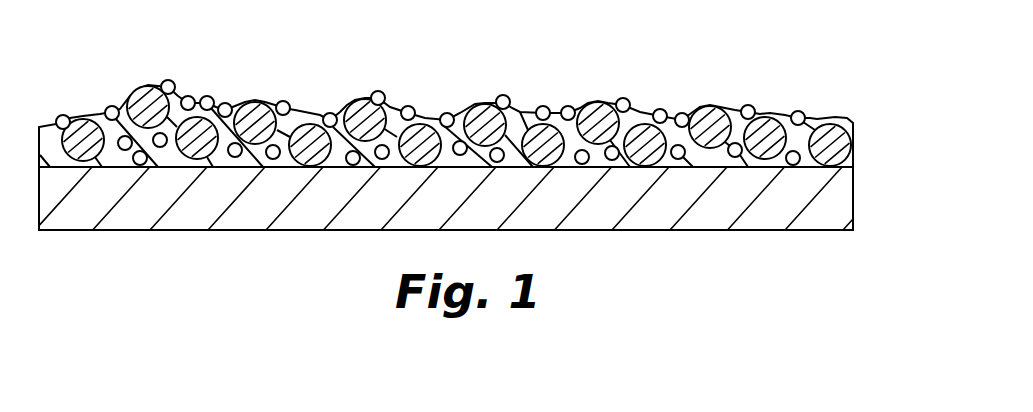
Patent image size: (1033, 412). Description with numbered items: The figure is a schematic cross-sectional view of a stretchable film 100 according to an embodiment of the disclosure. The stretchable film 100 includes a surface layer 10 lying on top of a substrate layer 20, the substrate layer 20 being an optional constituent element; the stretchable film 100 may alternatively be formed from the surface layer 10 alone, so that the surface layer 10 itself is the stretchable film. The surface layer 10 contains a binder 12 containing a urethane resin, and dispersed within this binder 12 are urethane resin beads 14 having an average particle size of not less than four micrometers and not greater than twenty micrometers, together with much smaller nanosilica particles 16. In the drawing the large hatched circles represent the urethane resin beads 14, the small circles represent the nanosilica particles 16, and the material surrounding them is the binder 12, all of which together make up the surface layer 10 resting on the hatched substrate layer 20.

The stretchable film 100 is at (478, 118).
The surface layer 10 is at (475, 89).
The binder 12 is at (732, 108).
The urethane resin bead 14 is at (603, 108).
The nanosilica particle 16 is at (503, 95).
The substrate layer 20 is at (817, 206).